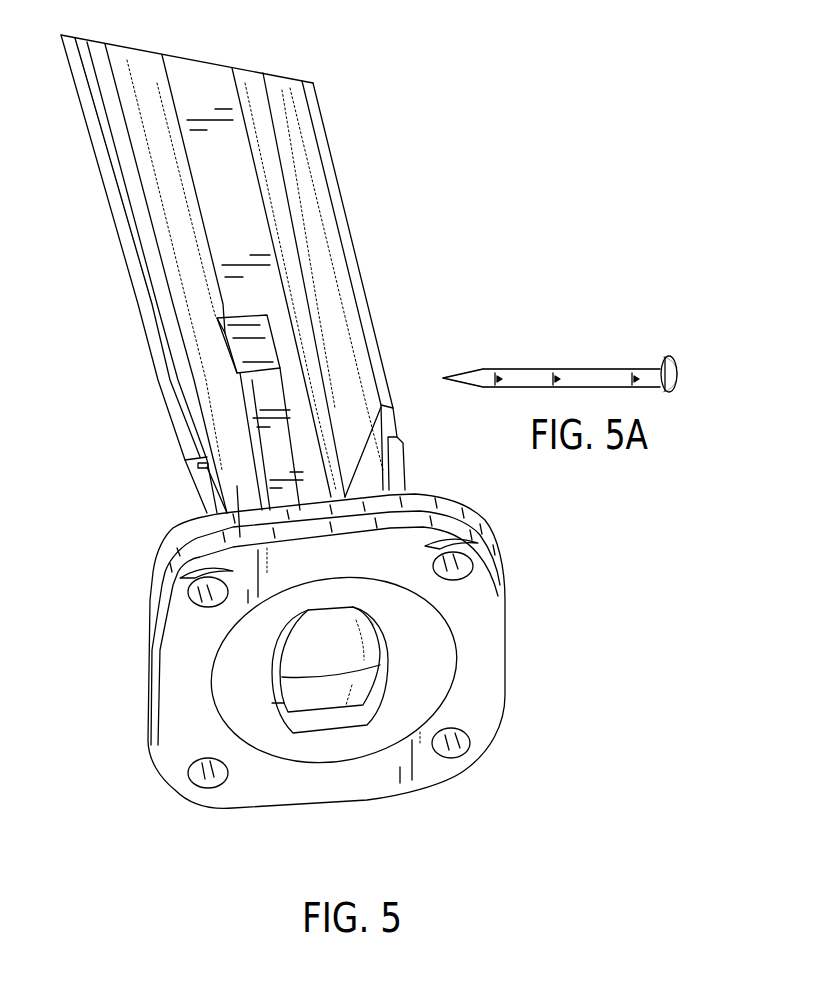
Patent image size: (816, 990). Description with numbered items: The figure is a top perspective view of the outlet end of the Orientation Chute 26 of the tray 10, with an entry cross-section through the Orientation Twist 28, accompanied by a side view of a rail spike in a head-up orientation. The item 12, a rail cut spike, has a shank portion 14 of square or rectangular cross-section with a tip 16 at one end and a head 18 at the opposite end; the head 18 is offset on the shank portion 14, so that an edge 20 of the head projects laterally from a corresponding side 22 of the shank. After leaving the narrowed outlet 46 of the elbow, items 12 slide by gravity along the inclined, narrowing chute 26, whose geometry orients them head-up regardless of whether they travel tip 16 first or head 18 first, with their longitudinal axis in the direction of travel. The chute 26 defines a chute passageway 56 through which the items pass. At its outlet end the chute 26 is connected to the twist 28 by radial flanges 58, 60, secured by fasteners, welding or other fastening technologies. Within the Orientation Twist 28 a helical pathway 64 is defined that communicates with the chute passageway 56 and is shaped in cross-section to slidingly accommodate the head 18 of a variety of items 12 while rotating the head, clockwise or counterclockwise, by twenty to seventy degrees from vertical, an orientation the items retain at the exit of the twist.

In FIG. 5, the tray 10 is at (383, 155).
In FIG. 5, the item 12 is at (267, 403).
In FIG. 5A, the item 12 is at (583, 318).
In FIG. 5A, the shank portion 14 is at (597, 378).
In FIG. 5, the tip 16 is at (224, 332).
In FIG. 5A, the tip 16 is at (458, 369).
In FIG. 5, the head 18 is at (340, 662).
In FIG. 5A, the head 18 is at (677, 384).
In FIG. 5, the edge 20 is at (365, 622).
In FIG. 5A, the edge 20 is at (669, 363).
In FIG. 5A, the side 22 is at (525, 368).
In FIG. 5, the Orientation Chute 26 is at (368, 242).
In FIG. 5, the Orientation Twist 28 is at (380, 804).
In FIG. 5, the outlet 46 is at (193, 270).
In FIG. 5, the chute passageway 56 is at (174, 200).
In FIG. 5, the radial flange 58 is at (164, 542).
In FIG. 5, the radial flange 60 is at (190, 641).
In FIG. 5, the helical pathway 64 is at (343, 717).